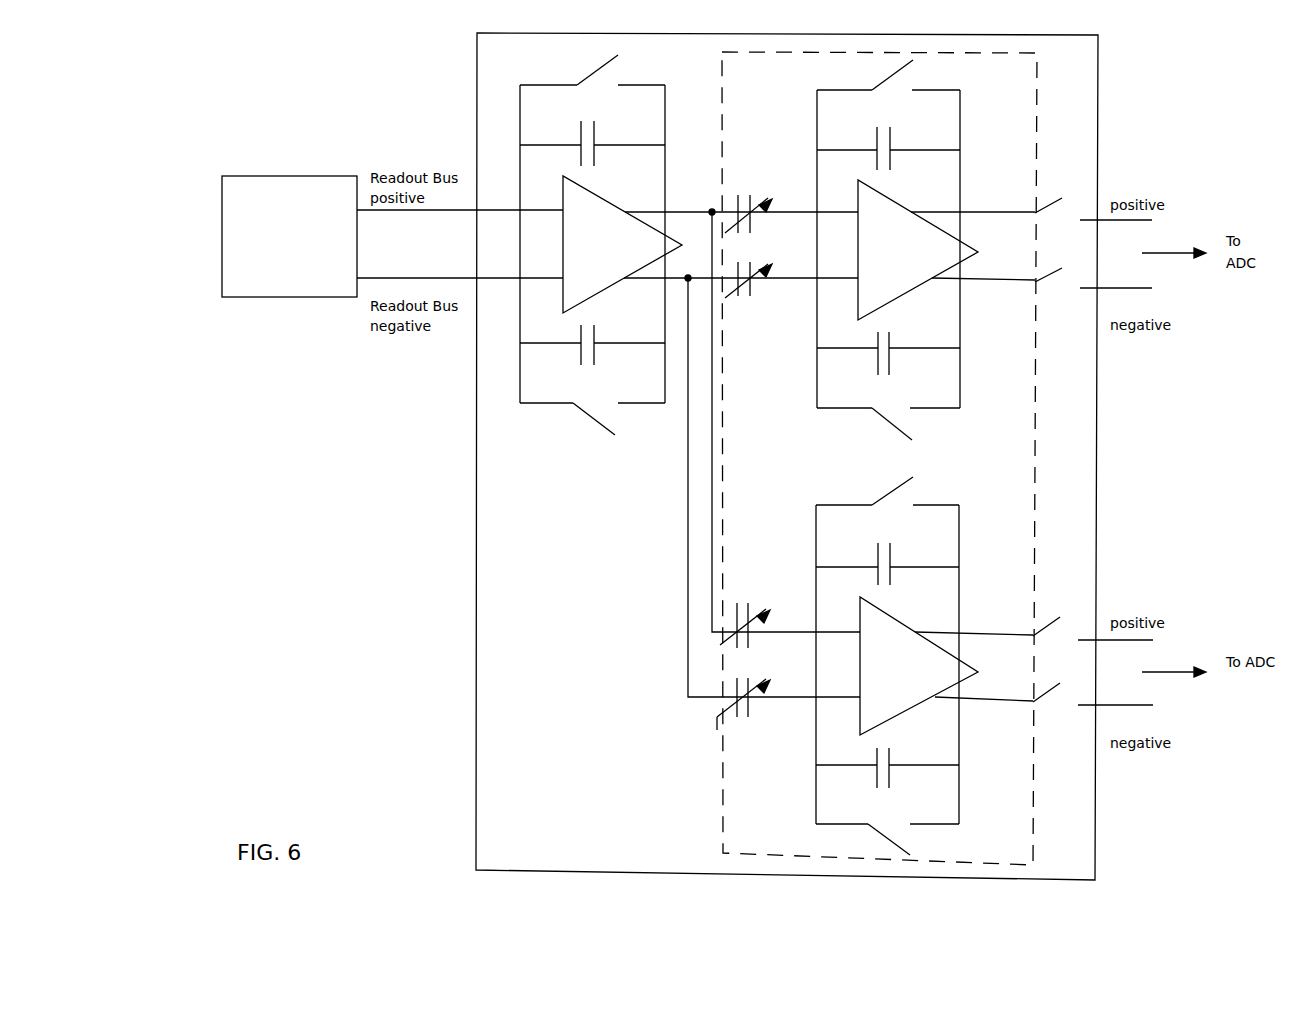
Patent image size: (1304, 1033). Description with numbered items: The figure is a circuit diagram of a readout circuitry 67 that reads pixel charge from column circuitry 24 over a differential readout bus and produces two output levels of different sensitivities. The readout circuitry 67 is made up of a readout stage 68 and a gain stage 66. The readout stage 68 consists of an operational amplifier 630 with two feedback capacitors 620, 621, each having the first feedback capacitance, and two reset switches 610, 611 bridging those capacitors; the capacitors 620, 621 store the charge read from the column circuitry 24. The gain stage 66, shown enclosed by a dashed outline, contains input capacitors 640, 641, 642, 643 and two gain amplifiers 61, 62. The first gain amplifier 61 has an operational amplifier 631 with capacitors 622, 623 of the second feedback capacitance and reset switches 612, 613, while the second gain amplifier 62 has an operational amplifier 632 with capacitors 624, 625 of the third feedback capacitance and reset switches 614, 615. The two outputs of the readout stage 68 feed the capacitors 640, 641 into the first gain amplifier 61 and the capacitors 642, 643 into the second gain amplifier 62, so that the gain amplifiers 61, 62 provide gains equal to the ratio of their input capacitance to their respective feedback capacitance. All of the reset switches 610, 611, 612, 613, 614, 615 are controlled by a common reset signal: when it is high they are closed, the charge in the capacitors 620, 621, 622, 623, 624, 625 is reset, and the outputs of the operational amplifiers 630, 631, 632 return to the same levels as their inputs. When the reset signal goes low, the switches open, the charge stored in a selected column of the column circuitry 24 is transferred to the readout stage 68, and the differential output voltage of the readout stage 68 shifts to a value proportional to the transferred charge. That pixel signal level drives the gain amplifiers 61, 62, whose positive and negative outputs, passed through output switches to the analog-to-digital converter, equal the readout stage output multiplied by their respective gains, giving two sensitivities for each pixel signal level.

The column circuitry 24 is at (282, 297).
The gain amplifier 61 is at (923, 252).
The gain amplifier 62 is at (919, 664).
The gain stage 66 is at (723, 767).
The readout circuitry 67 is at (477, 685).
The readout stage 68 is at (606, 287).
The reset switch 610 is at (584, 78).
The reset switch 611 is at (585, 421).
The reset switch 612 is at (874, 86).
The reset switch 613 is at (893, 427).
The reset switch 614 is at (882, 502).
The reset switch 615 is at (882, 838).
The capacitor 620 is at (580, 141).
The capacitor 621 is at (583, 348).
The capacitor 622 is at (875, 141).
The capacitor 623 is at (875, 365).
The capacitor 624 is at (877, 554).
The capacitor 625 is at (875, 778).
The operational amplifier 630 is at (563, 242).
The operational amplifier 631 is at (958, 240).
The operational amplifier 632 is at (960, 660).
The capacitor 640 is at (755, 196).
The capacitor 641 is at (755, 288).
The capacitor 642 is at (753, 610).
The capacitor 643 is at (751, 700).